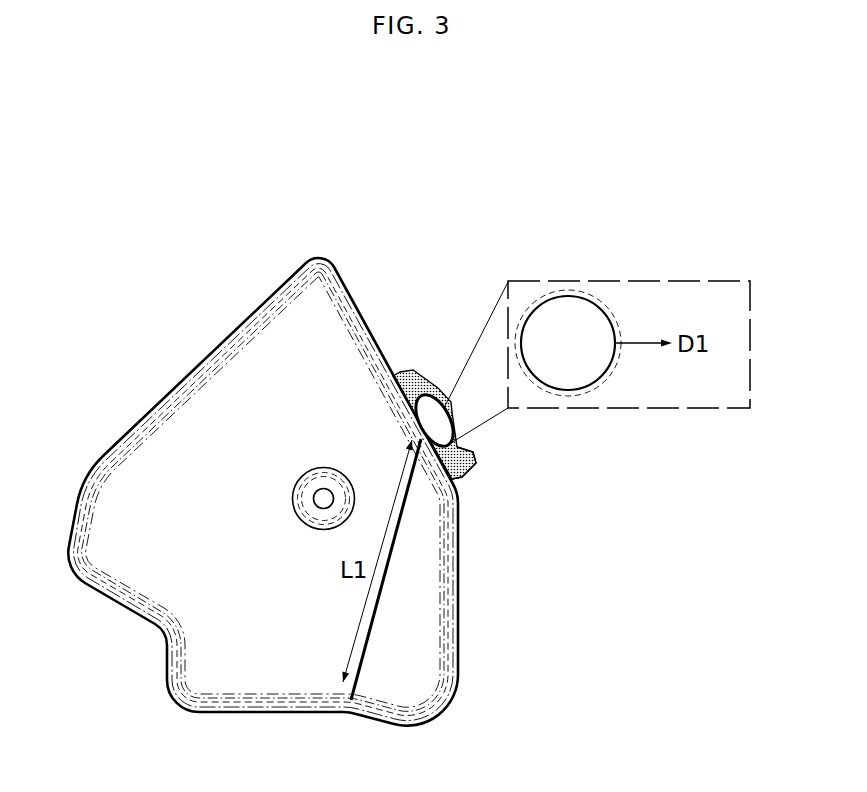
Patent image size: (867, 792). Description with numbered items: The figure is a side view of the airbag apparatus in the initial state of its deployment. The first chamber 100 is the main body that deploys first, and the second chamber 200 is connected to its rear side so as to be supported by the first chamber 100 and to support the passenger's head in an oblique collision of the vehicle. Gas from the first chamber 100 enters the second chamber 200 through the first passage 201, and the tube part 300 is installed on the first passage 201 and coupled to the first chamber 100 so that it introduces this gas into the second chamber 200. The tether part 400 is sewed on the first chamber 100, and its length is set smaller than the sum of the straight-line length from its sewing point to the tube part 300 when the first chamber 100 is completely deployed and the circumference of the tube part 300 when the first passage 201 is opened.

The first chamber 100 is at (323, 293).
The second chamber 200 is at (415, 373).
The first passage 201 is at (467, 478).
The tube part 300 is at (461, 430).
The tether part 400 is at (380, 633).